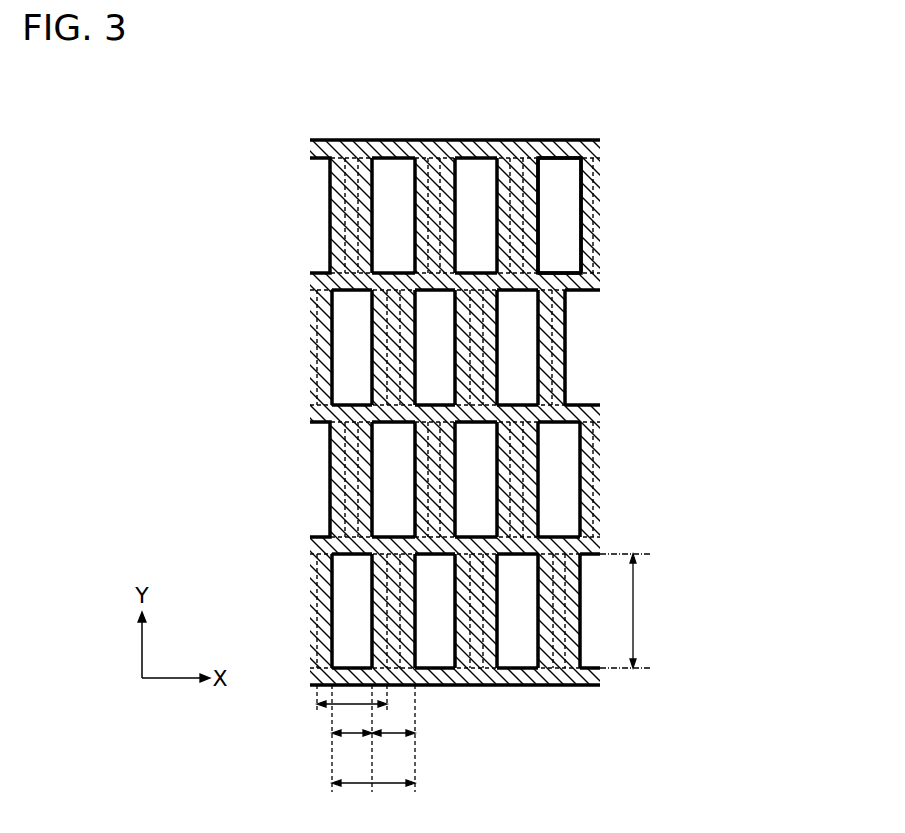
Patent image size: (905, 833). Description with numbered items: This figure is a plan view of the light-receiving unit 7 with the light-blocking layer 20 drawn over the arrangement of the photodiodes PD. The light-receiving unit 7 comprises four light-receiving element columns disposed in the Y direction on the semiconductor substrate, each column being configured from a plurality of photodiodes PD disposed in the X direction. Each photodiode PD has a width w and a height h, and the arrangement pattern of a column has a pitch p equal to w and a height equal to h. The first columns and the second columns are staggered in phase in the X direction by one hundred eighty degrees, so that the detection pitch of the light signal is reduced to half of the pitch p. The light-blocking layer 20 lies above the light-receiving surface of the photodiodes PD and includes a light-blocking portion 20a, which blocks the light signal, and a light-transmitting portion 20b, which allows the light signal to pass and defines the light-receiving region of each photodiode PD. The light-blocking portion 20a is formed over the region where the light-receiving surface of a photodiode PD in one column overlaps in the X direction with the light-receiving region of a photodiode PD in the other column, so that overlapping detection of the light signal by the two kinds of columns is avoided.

The light-receiving unit 7 is at (396, 137).
The light-blocking layer 20 is at (452, 369).
The light-blocking portion 20a is at (498, 152).
The light-transmitting portion 20b is at (565, 181).
The photodiode PD is at (570, 195).
The height of the photodiode h is at (626, 611).
The width of the photodiode w is at (352, 707).
The pitch p is at (372, 750).